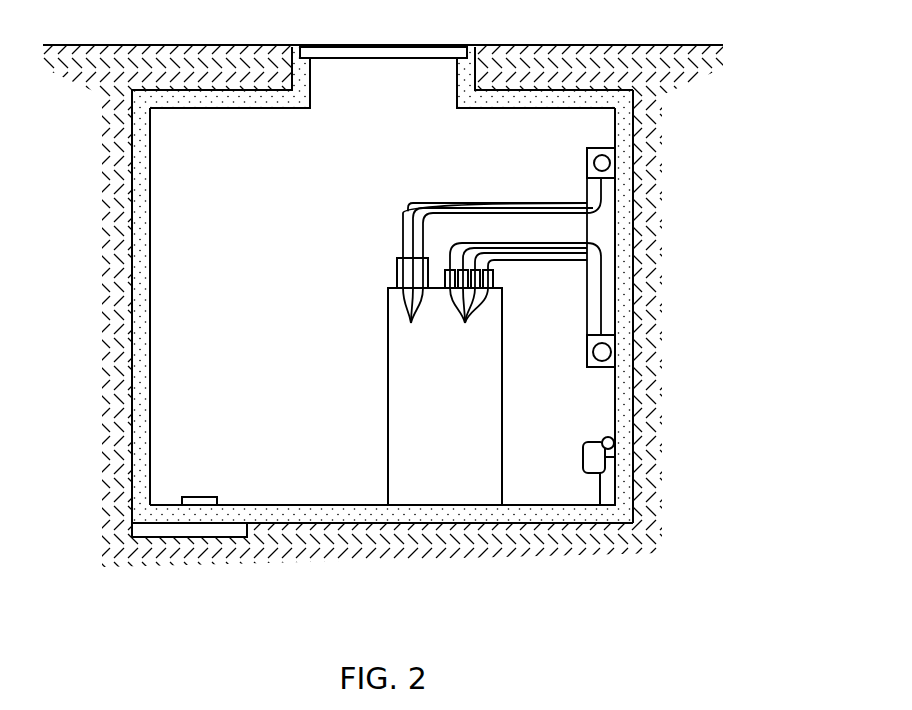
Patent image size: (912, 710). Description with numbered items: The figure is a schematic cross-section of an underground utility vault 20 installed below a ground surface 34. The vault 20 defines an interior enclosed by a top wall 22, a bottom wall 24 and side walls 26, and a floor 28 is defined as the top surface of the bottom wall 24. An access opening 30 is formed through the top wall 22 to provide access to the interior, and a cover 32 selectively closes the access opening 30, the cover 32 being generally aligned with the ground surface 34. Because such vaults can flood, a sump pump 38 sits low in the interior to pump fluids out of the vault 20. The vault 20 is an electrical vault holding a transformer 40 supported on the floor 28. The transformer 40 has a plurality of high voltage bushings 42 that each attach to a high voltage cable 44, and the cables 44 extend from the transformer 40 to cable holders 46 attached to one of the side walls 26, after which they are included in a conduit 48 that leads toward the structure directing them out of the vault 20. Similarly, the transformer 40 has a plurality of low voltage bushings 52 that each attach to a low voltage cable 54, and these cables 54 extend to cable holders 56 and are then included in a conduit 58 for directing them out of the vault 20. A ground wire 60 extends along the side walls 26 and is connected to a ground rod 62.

The underground utility vault 20 is at (711, 223).
The top wall 22 is at (533, 100).
The bottom wall 24 is at (310, 515).
The side walls 26 is at (138, 272).
The floor 28 is at (333, 504).
The access opening 30 is at (400, 72).
The cover 32 is at (338, 50).
The ground surface 34 is at (648, 47).
The sump pump 38 is at (198, 495).
The transformer 40 is at (387, 398).
The high voltage bushings 42 is at (412, 307).
The high voltage cable 44 is at (538, 213).
The cable holders 46 is at (600, 148).
The conduit 48 is at (612, 163).
The low voltage bushing 52 is at (469, 313).
The low voltage cable 54 is at (518, 242).
The cable holders 56 is at (600, 367).
The conduit 58 is at (613, 352).
The ground wire 60 is at (598, 436).
The ground rod 62 is at (612, 483).